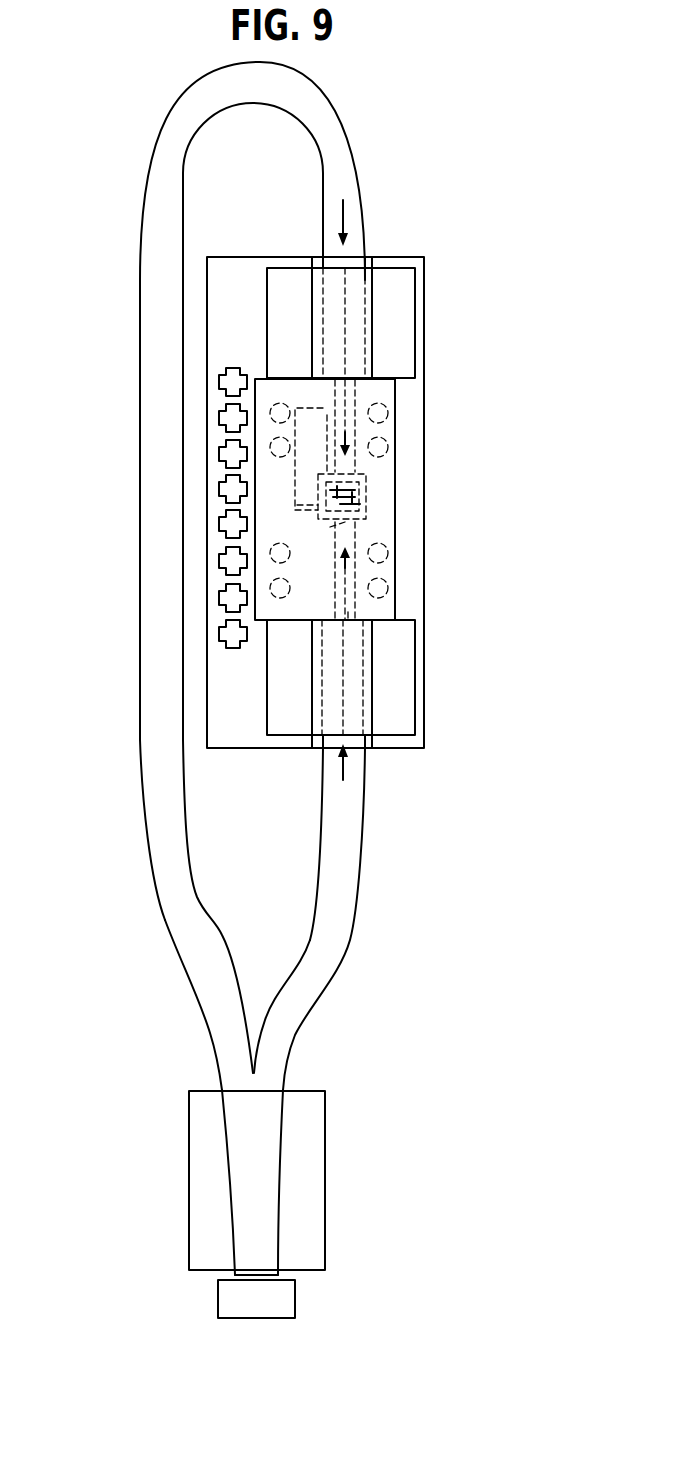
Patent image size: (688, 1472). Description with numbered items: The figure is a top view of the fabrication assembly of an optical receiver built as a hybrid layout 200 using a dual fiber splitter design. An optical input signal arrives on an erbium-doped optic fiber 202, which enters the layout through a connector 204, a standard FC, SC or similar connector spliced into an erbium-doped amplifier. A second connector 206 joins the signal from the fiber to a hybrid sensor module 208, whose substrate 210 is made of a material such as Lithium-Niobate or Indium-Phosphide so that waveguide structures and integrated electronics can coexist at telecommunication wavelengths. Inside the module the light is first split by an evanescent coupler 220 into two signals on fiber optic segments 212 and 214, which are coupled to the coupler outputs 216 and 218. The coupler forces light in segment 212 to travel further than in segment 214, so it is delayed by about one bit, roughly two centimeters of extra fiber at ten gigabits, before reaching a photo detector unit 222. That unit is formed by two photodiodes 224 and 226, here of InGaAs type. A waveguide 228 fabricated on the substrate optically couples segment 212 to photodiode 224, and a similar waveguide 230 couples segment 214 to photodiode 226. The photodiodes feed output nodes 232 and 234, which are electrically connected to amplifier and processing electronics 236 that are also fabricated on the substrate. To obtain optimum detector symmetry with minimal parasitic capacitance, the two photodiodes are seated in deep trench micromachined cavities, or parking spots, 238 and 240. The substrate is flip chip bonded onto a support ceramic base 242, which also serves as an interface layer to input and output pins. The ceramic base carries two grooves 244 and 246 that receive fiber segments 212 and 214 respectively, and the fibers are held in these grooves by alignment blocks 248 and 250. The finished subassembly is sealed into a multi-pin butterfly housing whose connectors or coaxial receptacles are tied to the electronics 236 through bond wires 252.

The hybrid layout 200 is at (124, 84).
The erbium-doped optic fiber 202 is at (268, 1274).
The connector 204 is at (288, 1308).
The connector 206 is at (325, 1127).
The hybrid sensor module 208 is at (448, 678).
The substrate 210 is at (382, 515).
The fiber optic segment 212 is at (348, 873).
The fiber optic segment 214 is at (150, 748).
The output of evanescent coupler 216 is at (305, 1045).
The output of evanescent coupler 218 is at (210, 1037).
The evanescent coupler 220 is at (265, 1150).
The photo detector unit 222 is at (380, 487).
The photodiode 224 is at (382, 532).
The photodiode 226 is at (370, 473).
The waveguide 228 is at (348, 612).
The waveguide 230 is at (347, 388).
The output node 232 is at (382, 505).
The output node 234 is at (297, 505).
The amplifier and processing electronics 236 is at (318, 472).
The micromachined cavity 238 is at (330, 527).
The micromachined cavity 240 is at (323, 468).
The support ceramic base 242 is at (398, 262).
The groove 244 is at (370, 748).
The groove 246 is at (317, 262).
The alignment block 248 is at (398, 707).
The alignment block 250 is at (400, 305).
The bond wires 252 is at (230, 378).